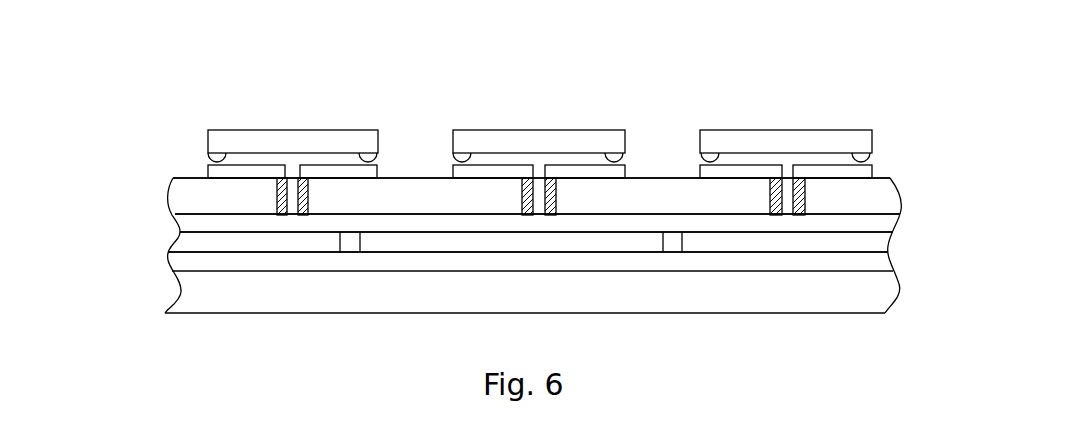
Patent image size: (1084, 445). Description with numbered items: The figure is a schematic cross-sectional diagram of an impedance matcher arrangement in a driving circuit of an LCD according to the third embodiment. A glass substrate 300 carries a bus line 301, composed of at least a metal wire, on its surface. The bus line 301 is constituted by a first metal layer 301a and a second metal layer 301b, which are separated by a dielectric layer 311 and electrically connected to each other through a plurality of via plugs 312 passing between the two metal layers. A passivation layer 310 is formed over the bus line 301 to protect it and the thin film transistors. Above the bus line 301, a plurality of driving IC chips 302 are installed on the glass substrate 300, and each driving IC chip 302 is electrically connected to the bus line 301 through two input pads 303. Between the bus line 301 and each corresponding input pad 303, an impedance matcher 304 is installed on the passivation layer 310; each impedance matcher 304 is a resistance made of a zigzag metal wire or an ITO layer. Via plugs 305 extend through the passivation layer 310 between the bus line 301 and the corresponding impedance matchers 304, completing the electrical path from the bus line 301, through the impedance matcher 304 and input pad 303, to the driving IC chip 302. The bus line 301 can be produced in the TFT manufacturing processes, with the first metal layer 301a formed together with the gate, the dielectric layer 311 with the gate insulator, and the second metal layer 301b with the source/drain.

The glass substrate 300 is at (559, 303).
The bus line 301 is at (98, 251).
The first metal layer 301a is at (188, 266).
The second metal layer 301b is at (190, 224).
The driving IC chip 302 is at (307, 135).
The input pad 303 is at (212, 160).
The impedance matcher 304 is at (208, 172).
The via plug 305 is at (277, 200).
The passivation layer 310 is at (883, 192).
The dielectric layer 311 is at (880, 243).
The via plug 312 is at (350, 240).